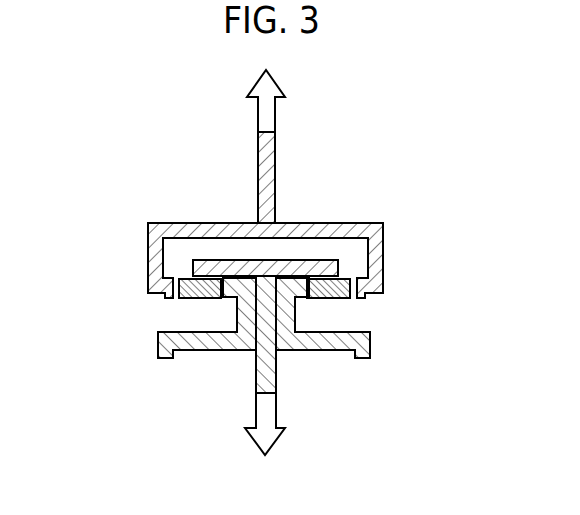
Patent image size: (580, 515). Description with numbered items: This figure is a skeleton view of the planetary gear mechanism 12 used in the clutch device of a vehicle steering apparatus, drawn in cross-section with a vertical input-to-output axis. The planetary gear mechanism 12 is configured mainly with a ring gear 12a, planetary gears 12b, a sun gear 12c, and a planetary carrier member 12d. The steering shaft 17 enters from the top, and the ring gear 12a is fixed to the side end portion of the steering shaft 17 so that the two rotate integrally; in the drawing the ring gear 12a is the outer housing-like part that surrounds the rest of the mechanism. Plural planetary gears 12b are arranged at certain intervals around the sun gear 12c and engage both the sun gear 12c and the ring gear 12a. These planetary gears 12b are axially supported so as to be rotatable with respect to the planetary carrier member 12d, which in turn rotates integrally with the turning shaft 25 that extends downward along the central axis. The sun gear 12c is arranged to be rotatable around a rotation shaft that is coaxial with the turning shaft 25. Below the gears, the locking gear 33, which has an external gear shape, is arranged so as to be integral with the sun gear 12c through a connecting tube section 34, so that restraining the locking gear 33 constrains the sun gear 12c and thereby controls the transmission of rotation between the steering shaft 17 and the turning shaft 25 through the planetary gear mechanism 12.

The planetary gear mechanism 12 is at (423, 218).
The ring gear 12a is at (365, 295).
The planetary gears 12b is at (178, 278).
The sun gear 12c is at (237, 295).
The planetary carrier member 12d is at (313, 260).
The steering shaft 17 is at (275, 167).
The turning shaft 25 is at (276, 380).
The locking gear 33 is at (370, 345).
The connecting tube section 34 is at (237, 318).